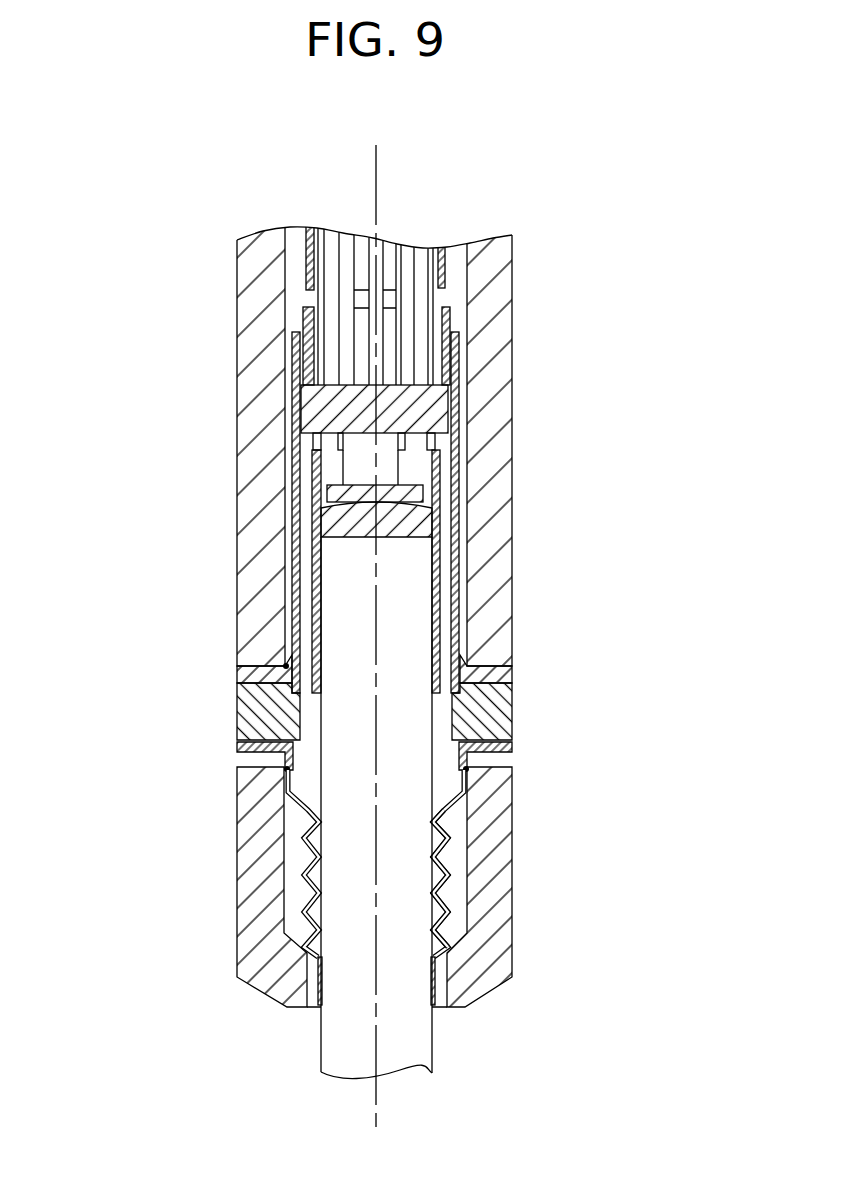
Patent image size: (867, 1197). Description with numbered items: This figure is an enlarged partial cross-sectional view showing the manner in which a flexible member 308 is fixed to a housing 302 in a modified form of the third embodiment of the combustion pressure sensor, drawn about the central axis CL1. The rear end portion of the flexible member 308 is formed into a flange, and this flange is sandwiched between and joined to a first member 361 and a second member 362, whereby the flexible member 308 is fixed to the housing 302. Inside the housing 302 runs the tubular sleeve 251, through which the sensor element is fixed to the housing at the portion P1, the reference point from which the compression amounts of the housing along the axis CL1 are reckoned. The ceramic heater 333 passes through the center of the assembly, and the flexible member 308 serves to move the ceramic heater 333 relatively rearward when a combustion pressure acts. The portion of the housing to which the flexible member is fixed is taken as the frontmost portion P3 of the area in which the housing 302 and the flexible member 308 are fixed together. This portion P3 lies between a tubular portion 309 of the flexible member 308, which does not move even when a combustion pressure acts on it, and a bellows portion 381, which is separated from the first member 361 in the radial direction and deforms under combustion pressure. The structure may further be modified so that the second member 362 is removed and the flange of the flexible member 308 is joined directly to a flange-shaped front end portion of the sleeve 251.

The axis CL1 is at (377, 182).
The housing 302 is at (512, 283).
The sleeve 251 is at (294, 540).
The portion to which the sensor element is fixed P1 is at (284, 667).
The second member 362 is at (237, 718).
The tubular portion 309 is at (468, 766).
The frontmost portion of the fixing area P3 is at (285, 769).
The first member 361 is at (237, 838).
The bellows portion 381 is at (452, 912).
The flexible member 308 is at (452, 885).
The ceramic heater 333 is at (433, 1051).